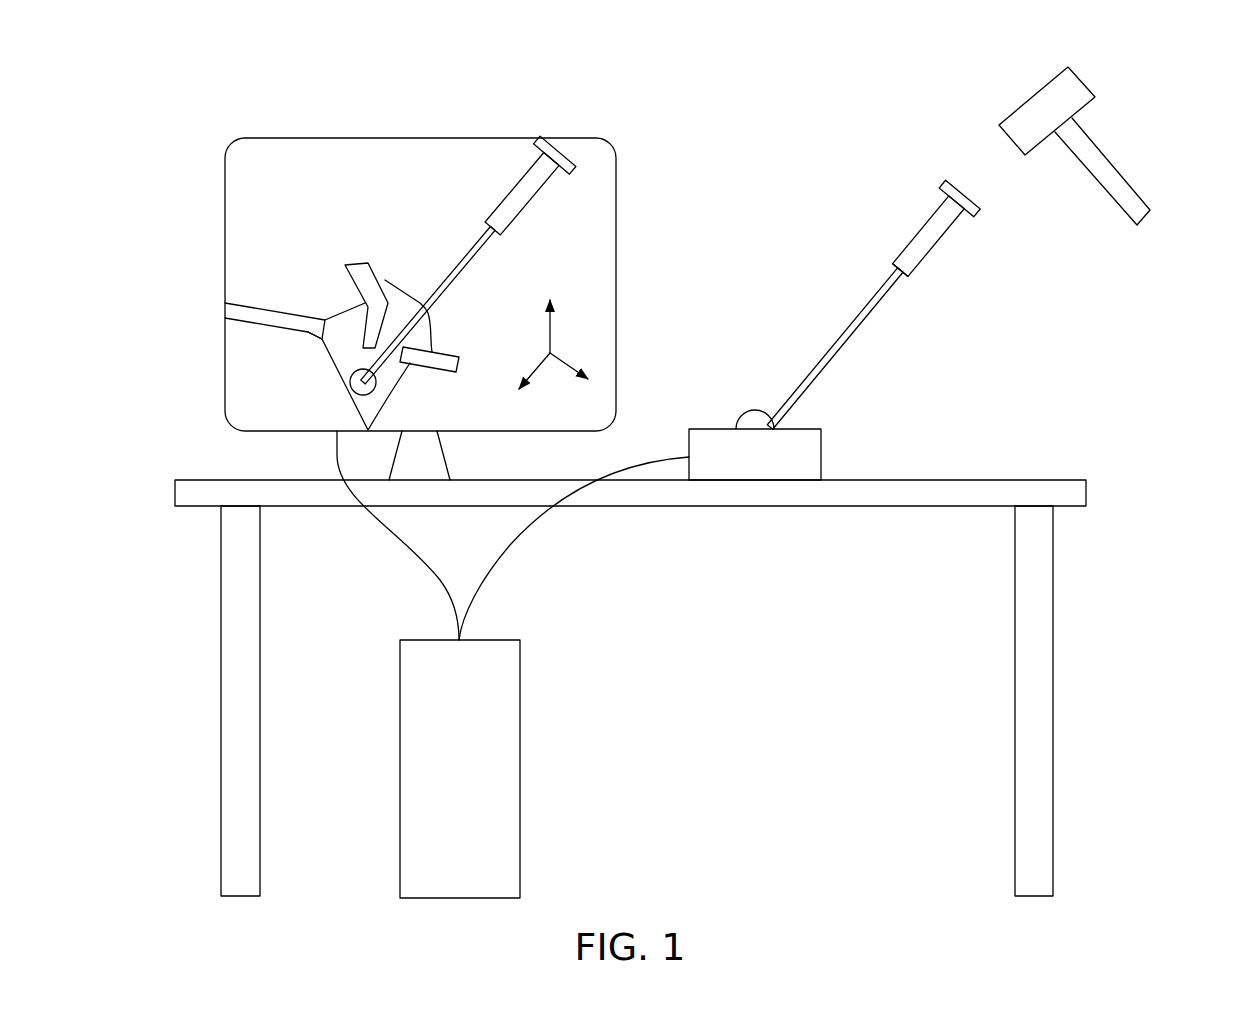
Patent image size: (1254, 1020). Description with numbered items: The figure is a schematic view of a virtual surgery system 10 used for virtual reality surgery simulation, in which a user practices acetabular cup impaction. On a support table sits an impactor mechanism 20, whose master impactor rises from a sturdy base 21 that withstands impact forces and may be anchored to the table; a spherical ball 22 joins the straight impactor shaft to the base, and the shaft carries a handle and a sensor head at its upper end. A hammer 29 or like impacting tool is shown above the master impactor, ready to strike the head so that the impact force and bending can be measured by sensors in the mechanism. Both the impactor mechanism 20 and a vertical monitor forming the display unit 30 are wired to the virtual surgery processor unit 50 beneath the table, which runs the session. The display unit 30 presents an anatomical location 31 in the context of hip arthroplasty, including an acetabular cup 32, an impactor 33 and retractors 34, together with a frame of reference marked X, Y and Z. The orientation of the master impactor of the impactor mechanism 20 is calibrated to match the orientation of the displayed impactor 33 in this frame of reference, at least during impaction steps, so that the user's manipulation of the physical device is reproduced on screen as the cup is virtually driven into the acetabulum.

The virtual surgery system 10 is at (245, 112).
The impactor mechanism 20 is at (945, 132).
The base 21 is at (823, 457).
The ball 22 is at (755, 416).
The hammer 29 is at (1118, 167).
The display unit 30 is at (225, 282).
The anatomical location 31 is at (398, 208).
The acetabular cup 32 is at (350, 379).
The impactor 33 is at (523, 212).
The retractors 34 is at (273, 310).
The virtual surgery processor unit 50 is at (520, 768).